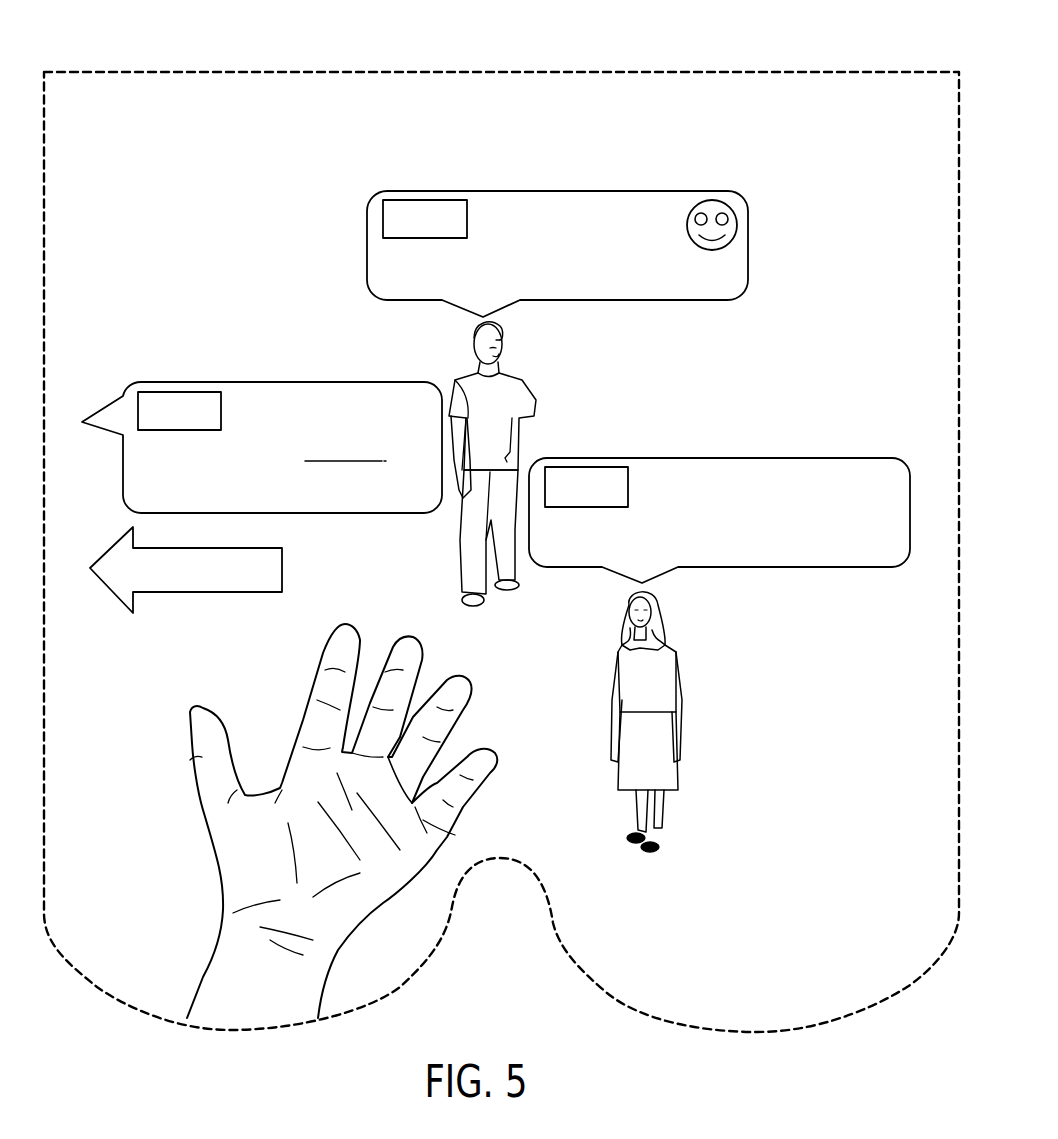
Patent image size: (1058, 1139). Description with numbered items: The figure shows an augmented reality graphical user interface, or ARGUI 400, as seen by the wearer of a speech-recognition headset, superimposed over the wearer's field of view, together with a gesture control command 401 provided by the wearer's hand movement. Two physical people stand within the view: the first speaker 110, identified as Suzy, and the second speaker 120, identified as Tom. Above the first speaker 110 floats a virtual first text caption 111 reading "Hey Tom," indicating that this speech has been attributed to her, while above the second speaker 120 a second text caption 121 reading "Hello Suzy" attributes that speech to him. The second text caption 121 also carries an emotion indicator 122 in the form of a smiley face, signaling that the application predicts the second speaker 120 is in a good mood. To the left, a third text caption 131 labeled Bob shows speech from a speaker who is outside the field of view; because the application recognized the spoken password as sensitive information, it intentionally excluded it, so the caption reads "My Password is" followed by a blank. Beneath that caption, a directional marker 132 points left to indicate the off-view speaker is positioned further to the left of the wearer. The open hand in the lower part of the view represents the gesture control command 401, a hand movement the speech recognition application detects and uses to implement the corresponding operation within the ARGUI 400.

The augmented reality graphical user interface (ARGUI) 400 is at (682, 72).
The second text caption 121 is at (550, 191).
The emotion indicator 122 is at (712, 200).
The second speaker 120 is at (507, 330).
The third text caption 131 is at (300, 382).
The directional marker 132 is at (286, 566).
The first text caption 111 is at (670, 458).
The first speaker 110 is at (665, 605).
The gesture control command 401 is at (473, 686).